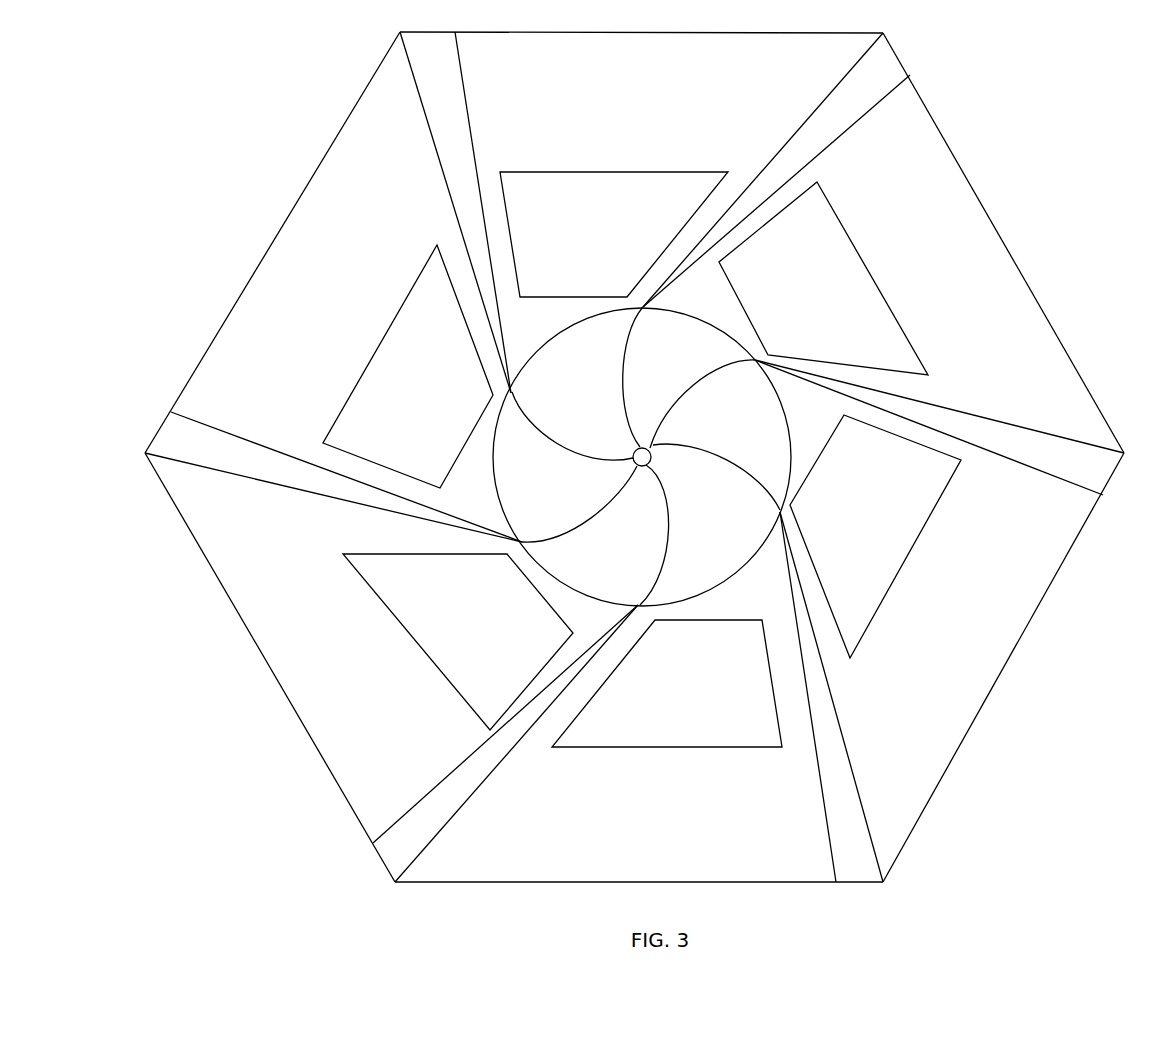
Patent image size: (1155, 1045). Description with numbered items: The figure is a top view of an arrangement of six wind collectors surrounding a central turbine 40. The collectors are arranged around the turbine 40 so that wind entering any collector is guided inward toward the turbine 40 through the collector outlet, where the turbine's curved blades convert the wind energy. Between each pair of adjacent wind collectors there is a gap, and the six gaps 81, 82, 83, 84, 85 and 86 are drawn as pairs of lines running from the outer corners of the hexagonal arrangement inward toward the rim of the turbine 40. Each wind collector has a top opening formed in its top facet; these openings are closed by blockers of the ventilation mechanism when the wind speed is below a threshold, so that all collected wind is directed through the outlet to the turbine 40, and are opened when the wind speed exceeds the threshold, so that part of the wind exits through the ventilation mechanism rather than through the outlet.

The turbine 40 is at (604, 431).
The gap 81 is at (861, 847).
The gap 82 is at (1086, 473).
The gap 83 is at (871, 99).
The gap 84 is at (443, 83).
The gap 85 is at (210, 454).
The gap 86 is at (418, 847).